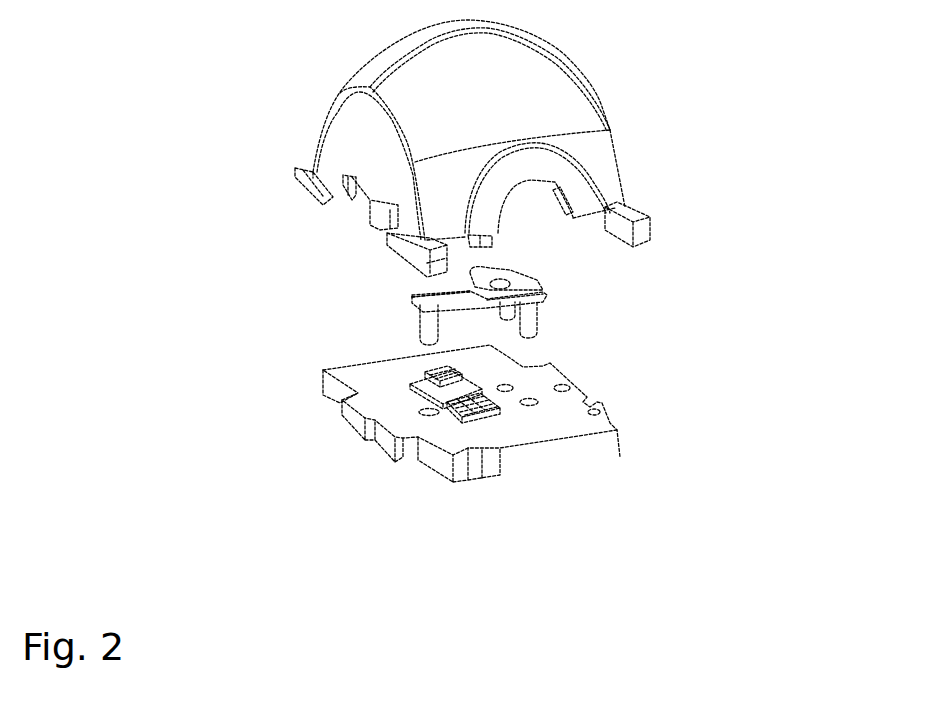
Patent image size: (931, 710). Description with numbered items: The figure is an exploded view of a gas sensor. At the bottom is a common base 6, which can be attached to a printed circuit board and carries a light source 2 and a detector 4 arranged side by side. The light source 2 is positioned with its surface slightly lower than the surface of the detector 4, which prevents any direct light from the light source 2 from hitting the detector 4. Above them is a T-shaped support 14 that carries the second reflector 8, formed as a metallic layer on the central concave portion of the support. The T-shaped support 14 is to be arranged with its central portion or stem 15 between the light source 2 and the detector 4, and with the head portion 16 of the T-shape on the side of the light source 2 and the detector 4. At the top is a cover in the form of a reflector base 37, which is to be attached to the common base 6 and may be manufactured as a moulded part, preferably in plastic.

The reflector base 37 is at (547, 82).
The second reflector 8 is at (495, 283).
The head portion 16 is at (578, 300).
The T-shaped support 14 is at (548, 300).
The stem 15 is at (412, 297).
The detector 4 is at (410, 385).
The light source 2 is at (442, 410).
The common base 6 is at (580, 430).